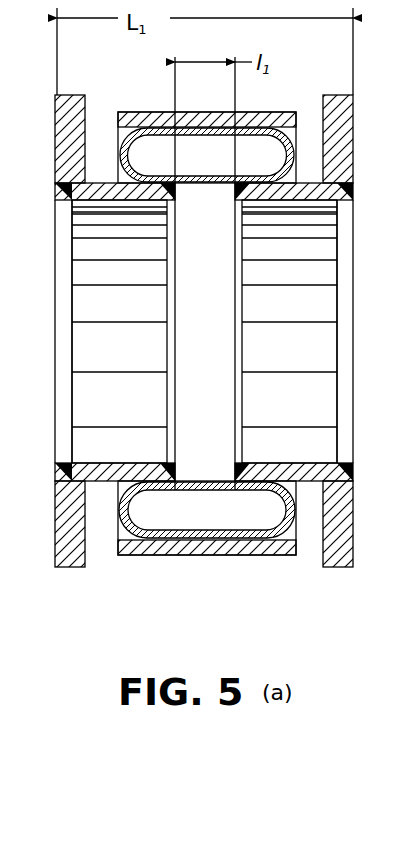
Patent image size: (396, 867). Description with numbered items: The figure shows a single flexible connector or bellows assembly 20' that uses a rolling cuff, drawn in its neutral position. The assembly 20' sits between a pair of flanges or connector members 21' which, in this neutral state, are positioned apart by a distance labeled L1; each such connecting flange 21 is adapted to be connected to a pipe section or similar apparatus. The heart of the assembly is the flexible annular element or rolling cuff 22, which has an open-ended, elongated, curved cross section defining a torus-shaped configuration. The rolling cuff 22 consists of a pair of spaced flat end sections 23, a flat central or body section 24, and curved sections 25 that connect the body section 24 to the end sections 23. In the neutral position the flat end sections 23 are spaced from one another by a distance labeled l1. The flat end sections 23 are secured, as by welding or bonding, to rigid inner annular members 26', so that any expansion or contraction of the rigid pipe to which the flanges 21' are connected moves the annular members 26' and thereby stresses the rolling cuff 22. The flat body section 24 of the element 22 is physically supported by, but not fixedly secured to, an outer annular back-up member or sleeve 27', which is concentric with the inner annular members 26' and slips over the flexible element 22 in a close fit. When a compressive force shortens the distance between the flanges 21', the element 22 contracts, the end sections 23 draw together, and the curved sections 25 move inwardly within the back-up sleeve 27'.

The flexible connector assembly 20' is at (211, 343).
The connecting flange 21 is at (359, 331).
The flange or connector member 21' is at (55, 362).
The rolling cuff 22 is at (303, 134).
The flat end section 23 is at (245, 168).
The flat central or body section 24 is at (226, 134).
The curved section 25 is at (128, 160).
The inner annular member 26' is at (204, 332).
The back-up sleeve 27' is at (207, 315).